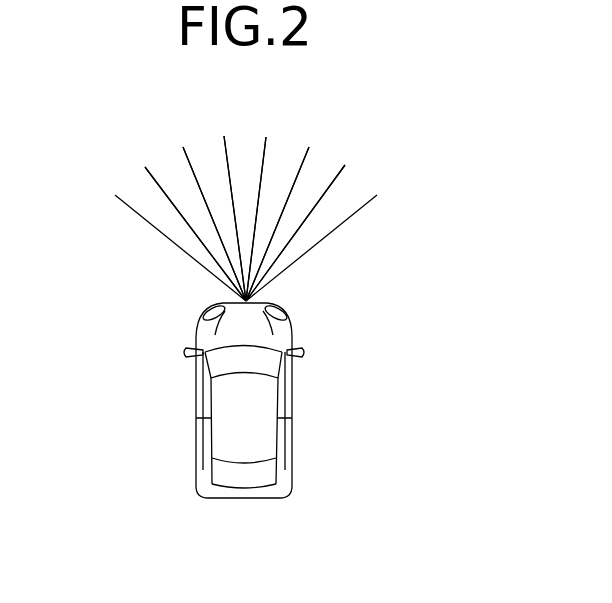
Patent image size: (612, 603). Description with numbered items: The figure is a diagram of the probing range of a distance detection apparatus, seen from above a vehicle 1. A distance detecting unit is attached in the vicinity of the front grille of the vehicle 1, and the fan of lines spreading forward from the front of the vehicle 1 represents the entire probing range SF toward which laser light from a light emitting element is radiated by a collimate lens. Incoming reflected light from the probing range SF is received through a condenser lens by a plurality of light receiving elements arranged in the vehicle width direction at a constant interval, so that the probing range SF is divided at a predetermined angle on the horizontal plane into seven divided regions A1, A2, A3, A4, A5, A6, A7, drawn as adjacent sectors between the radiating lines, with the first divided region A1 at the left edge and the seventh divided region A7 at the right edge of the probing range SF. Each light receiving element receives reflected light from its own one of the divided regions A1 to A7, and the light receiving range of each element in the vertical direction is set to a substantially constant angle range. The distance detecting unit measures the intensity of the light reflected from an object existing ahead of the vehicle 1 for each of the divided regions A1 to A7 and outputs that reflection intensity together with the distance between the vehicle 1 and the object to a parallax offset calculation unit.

The vehicle 1 is at (292, 462).
The probing range SF is at (390, 110).
The divided region A1 is at (180, 234).
The divided region A2 is at (195, 223).
The divided region A3 is at (214, 214).
The divided region A4 is at (245, 212).
The divided region A5 is at (277, 214).
The divided region A6 is at (295, 223).
The divided region A7 is at (311, 233).